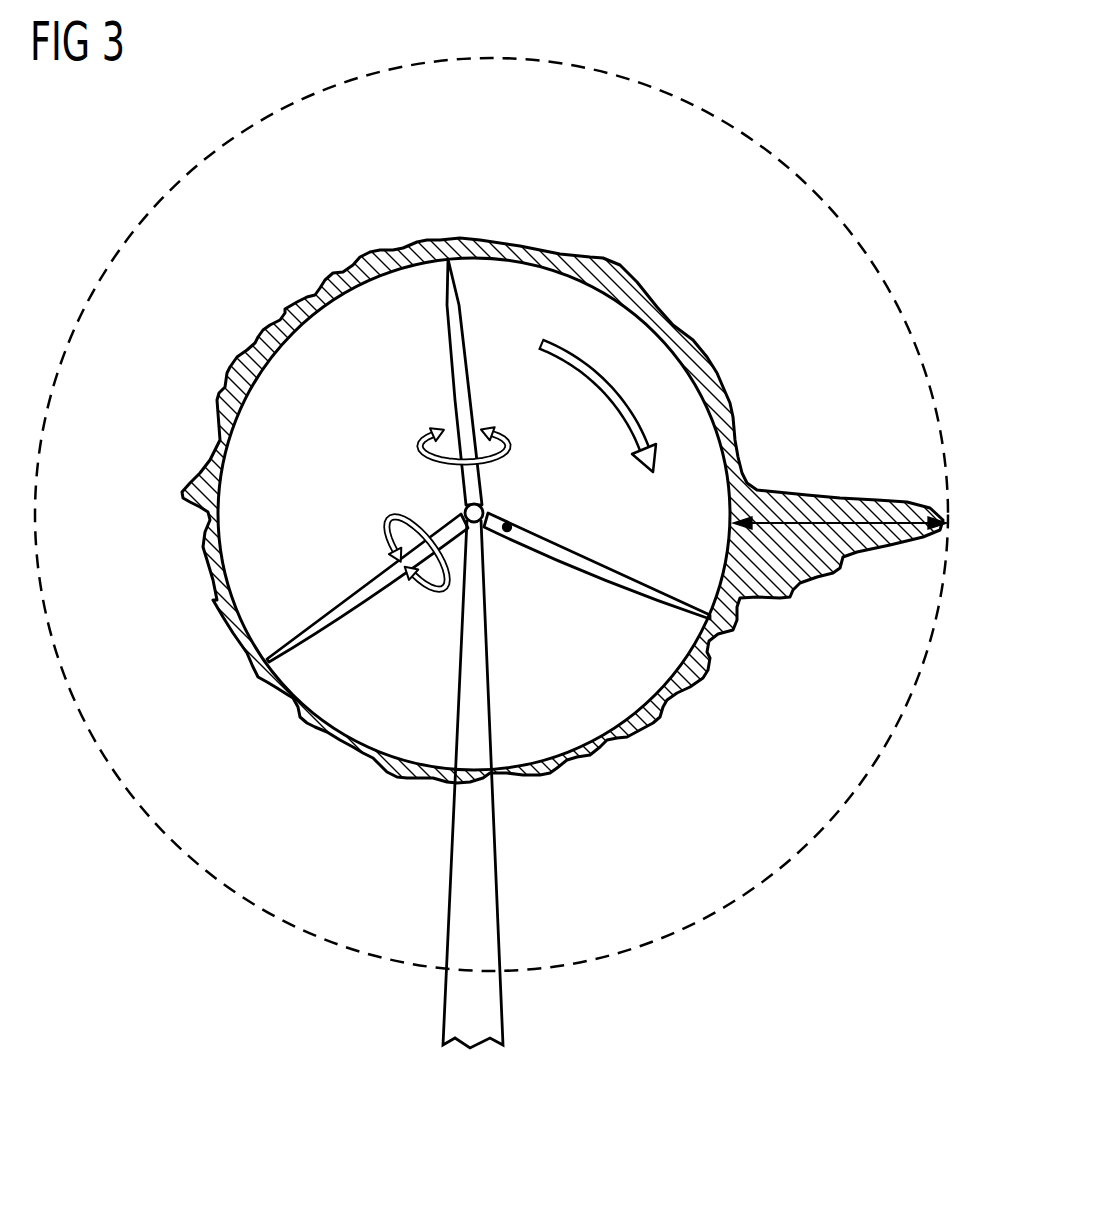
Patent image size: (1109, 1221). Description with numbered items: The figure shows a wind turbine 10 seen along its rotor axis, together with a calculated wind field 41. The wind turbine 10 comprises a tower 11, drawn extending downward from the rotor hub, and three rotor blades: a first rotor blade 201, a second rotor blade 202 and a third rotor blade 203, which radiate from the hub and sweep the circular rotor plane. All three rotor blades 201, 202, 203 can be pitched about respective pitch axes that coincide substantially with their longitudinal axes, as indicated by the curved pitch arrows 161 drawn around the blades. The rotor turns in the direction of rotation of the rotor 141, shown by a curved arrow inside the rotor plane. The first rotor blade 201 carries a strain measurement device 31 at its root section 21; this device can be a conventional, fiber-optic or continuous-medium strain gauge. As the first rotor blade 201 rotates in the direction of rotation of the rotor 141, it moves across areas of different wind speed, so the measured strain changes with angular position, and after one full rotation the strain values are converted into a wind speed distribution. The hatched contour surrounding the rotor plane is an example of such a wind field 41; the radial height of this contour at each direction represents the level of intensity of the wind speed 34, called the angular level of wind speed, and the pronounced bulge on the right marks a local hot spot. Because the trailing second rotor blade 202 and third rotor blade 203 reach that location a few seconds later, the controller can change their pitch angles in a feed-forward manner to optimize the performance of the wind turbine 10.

The wind turbine 10 is at (172, 896).
The tower 11 is at (495, 1003).
The root section 21 is at (509, 523).
The strain measurement device 31 is at (506, 532).
The wind speed 34 is at (826, 520).
The wind field 41 is at (782, 601).
The direction of rotation of the rotor 141 is at (601, 393).
The pitch rotation of blades 161 is at (420, 446).
The first rotor blade 201 is at (641, 581).
The second rotor blade 202 is at (456, 320).
The third rotor blade 203 is at (326, 615).